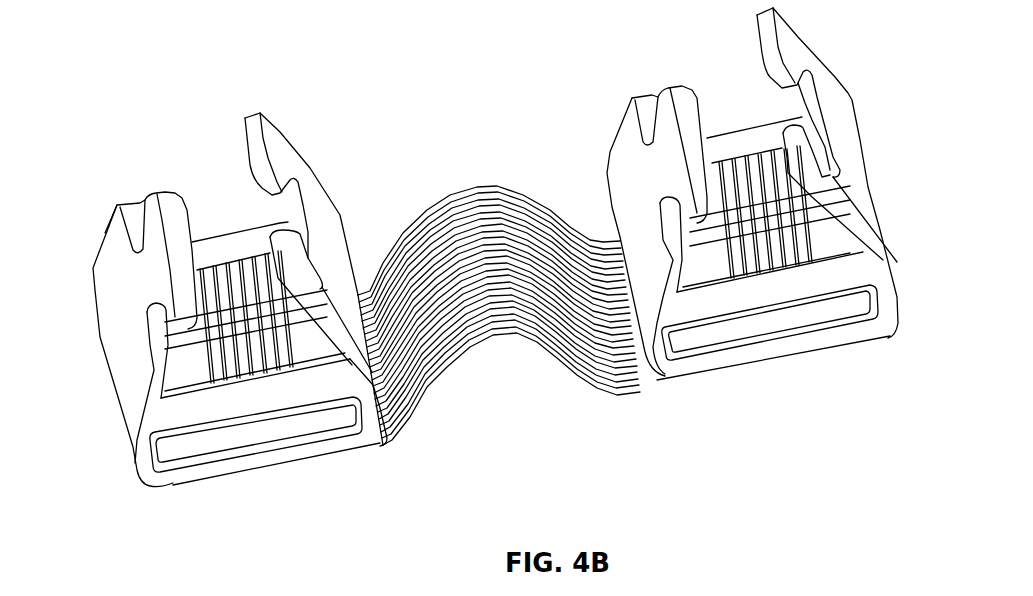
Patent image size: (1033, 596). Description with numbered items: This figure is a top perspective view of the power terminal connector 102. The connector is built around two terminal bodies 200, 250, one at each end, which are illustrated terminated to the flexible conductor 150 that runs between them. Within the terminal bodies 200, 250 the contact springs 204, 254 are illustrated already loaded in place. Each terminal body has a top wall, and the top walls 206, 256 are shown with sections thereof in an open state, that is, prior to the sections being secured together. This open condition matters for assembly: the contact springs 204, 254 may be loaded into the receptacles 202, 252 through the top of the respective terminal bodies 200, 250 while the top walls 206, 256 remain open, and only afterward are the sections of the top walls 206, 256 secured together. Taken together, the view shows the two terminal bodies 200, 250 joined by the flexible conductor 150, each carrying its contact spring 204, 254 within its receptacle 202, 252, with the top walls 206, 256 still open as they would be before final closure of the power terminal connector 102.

The power terminal connector 102 is at (467, 116).
The flexible conductor 150 is at (452, 370).
The terminal body 200 is at (248, 462).
The receptacle 202 is at (190, 447).
The contact spring 204 is at (260, 403).
The top wall 206 is at (127, 322).
The terminal body 250 is at (835, 340).
The receptacle 252 is at (848, 306).
The contact spring 254 is at (790, 292).
The top wall 256 is at (847, 157).